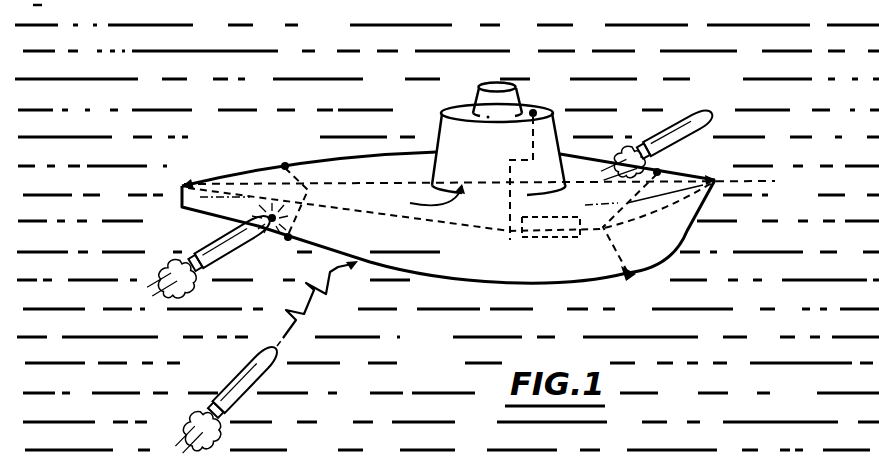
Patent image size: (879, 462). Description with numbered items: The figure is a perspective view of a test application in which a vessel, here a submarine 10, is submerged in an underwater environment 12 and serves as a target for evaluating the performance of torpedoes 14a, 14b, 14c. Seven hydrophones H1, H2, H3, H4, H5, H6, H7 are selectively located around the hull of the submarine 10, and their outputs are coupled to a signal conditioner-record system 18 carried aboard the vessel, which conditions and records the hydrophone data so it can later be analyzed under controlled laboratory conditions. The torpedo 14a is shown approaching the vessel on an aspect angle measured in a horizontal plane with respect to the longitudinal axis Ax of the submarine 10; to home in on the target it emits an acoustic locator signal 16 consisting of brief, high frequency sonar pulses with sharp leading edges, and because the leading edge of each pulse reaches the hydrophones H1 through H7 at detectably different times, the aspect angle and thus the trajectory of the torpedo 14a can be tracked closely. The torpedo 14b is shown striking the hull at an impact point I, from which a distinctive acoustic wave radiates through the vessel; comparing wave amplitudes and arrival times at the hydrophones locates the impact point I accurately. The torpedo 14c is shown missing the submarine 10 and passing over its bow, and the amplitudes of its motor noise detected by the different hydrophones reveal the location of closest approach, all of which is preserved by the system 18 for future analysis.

The submarine 10 is at (477, 264).
The underwater environment 12 is at (433, 356).
The torpedo 14a is at (242, 365).
The torpedo 14b is at (217, 240).
The torpedo 14c is at (700, 108).
The acoustic locator signal 16 is at (331, 297).
The signal conditioner-record system 18 is at (566, 240).
The hydrophone H1 is at (712, 179).
The hydrophone H2 is at (660, 170).
The hydrophone H3 is at (628, 277).
The hydrophone H4 is at (534, 109).
The hydrophone H5 is at (285, 163).
The hydrophone H6 is at (287, 241).
The hydrophone H7 is at (192, 170).
The impact point I is at (272, 213).
The longitudinal axis Ax is at (495, 181).